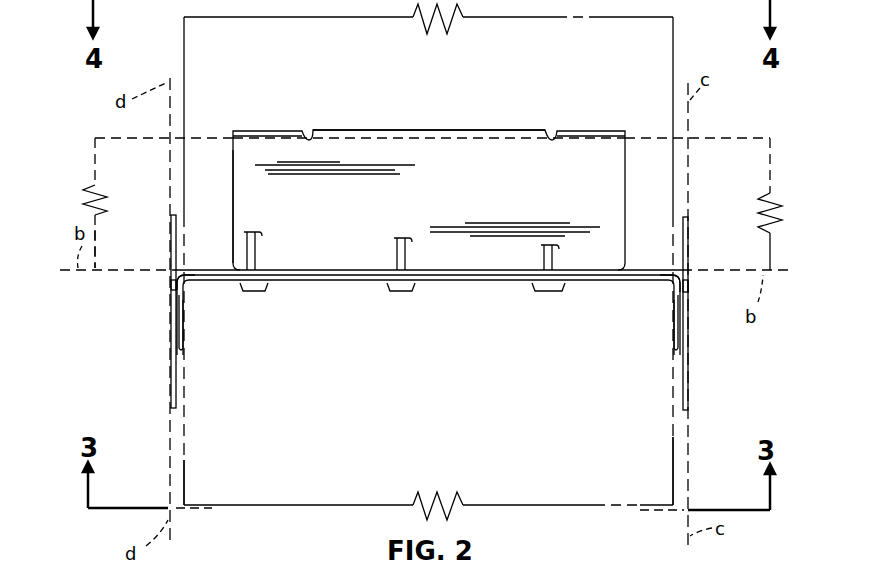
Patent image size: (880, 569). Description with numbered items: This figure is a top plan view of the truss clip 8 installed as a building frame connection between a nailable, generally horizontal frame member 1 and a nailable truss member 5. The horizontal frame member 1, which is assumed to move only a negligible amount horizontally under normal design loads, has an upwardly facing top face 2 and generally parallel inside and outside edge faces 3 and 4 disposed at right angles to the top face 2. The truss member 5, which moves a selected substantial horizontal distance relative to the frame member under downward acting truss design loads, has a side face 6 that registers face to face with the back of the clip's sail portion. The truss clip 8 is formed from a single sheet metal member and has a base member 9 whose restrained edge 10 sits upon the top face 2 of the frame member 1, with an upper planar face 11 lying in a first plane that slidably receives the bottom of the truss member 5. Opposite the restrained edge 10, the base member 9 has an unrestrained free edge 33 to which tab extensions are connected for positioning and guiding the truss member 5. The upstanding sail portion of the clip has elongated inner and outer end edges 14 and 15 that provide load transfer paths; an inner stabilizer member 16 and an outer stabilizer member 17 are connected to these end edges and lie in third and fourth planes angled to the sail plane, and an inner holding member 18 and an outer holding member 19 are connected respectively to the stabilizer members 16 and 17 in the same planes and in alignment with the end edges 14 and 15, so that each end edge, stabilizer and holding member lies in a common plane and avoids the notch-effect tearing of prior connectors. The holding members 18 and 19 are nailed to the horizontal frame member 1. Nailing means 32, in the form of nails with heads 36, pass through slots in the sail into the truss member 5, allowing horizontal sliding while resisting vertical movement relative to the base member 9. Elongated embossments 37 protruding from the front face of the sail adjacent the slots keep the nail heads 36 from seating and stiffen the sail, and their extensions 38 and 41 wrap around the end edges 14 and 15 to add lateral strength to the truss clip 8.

The horizontal frame member 1 is at (184, 441).
The top face 2 is at (546, 82).
The inside edge face 3 is at (673, 437).
The outside edge face 4 is at (182, 460).
The truss member 5 is at (722, 139).
The side face 6 is at (128, 272).
The truss clip 8 is at (412, 166).
The base member 9 is at (236, 193).
The restrained edge 10 is at (303, 268).
The upper planar face 11 is at (492, 190).
The inner end edge 14 is at (698, 282).
The outer end edge 15 is at (176, 280).
The inner stabilizer member 16 is at (690, 350).
The outer stabilizer member 17 is at (171, 375).
The inner holding member 18 is at (690, 250).
The outer holding member 19 is at (171, 247).
The nailing means 32 is at (258, 236).
The unrestrained free edge 33 is at (395, 130).
The heads 36 is at (262, 292).
The elongated embossments 37 is at (336, 284).
The embossment extension 38 is at (676, 300).
The embossment extension 41 is at (182, 300).